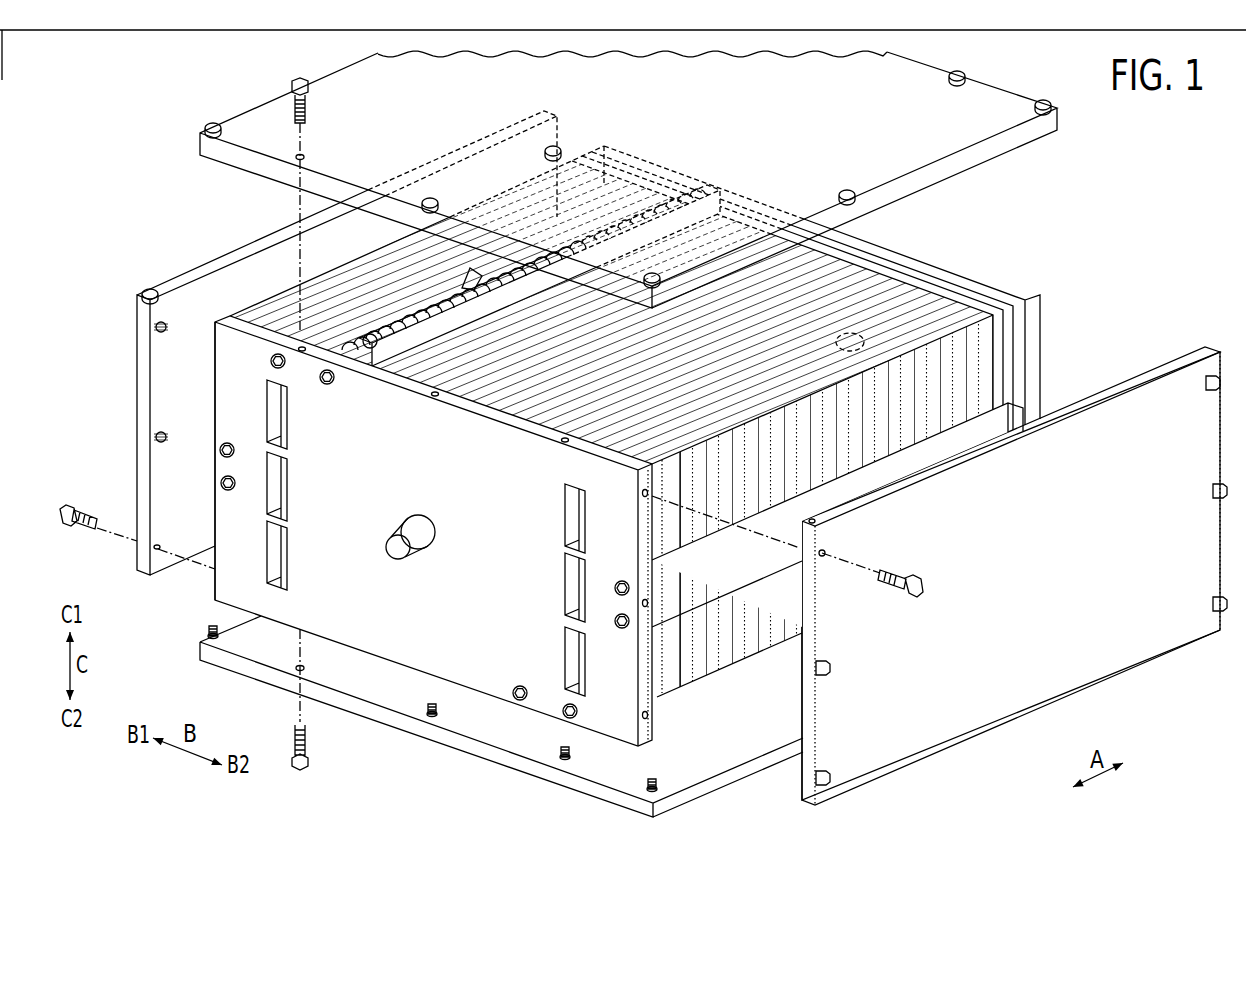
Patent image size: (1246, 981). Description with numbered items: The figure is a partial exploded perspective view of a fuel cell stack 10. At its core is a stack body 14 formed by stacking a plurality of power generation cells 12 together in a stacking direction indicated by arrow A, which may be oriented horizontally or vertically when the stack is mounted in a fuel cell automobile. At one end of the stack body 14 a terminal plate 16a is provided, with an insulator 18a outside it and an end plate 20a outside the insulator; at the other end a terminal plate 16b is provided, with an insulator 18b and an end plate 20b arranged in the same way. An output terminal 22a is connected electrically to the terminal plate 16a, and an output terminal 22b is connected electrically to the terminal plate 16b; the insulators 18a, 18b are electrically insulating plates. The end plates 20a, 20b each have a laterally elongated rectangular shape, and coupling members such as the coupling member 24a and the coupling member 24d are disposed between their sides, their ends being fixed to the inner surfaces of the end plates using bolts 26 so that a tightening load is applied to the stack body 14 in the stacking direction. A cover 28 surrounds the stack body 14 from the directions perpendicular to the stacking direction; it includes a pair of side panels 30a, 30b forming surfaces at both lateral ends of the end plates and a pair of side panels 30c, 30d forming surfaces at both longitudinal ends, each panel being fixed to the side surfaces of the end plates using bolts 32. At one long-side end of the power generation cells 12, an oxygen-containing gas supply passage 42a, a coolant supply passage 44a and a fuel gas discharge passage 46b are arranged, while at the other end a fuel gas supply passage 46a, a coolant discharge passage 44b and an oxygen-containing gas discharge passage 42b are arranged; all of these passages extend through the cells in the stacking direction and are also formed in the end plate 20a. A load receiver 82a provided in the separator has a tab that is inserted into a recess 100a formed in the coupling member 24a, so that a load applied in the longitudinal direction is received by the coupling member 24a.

The fuel cell stack 10 is at (1201, 137).
The power generation cell 12 is at (955, 410).
The stack body 14 is at (957, 411).
The terminal plate 16a is at (676, 683).
The terminal plate 16b is at (990, 346).
The insulator 18a is at (656, 690).
The insulator 18b is at (995, 309).
The end plate 20a is at (483, 680).
The end plate 20b is at (990, 286).
The output terminal 22a is at (398, 550).
The output terminal 22b is at (852, 352).
The coupling member 24a is at (648, 186).
The coupling member 24d is at (972, 440).
The bolt 26 is at (271, 364).
The cover 28 is at (243, 102).
The side panel 30a is at (217, 150).
The side panel 30b is at (381, 712).
The side panel 30c is at (143, 362).
The side panel 30d is at (920, 752).
The bolt 32 is at (296, 82).
The oxygen-containing gas supply passage 42a is at (288, 413).
The oxygen-containing gas discharge passage 42b is at (565, 659).
The coolant supply passage 44a is at (288, 484).
The coolant discharge passage 44b is at (565, 589).
The fuel gas supply passage 46a is at (565, 518).
The fuel gas discharge passage 46b is at (288, 549).
The load receiver 82a is at (437, 292).
The recess 100a is at (472, 278).